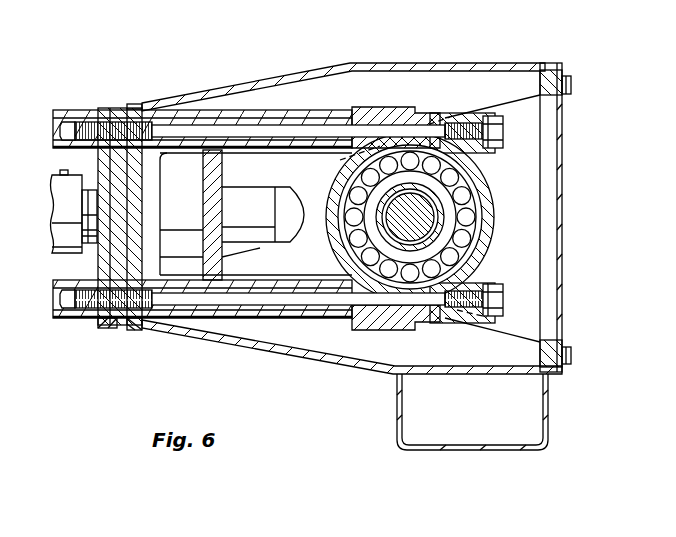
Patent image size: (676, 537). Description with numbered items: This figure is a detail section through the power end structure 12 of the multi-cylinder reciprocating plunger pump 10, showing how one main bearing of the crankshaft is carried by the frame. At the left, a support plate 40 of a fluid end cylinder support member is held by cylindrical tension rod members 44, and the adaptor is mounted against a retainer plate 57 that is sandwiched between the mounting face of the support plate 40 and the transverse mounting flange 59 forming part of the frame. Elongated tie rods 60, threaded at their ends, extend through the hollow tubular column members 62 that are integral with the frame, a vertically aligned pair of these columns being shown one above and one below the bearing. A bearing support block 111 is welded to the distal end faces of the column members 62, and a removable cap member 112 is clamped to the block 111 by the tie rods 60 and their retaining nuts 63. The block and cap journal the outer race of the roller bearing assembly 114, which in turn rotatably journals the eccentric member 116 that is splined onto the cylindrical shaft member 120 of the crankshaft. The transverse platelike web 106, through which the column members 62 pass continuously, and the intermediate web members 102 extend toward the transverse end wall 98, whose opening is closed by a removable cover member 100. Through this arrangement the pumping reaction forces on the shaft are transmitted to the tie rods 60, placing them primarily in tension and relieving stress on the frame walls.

The multi-cylinder reciprocating plunger pump 10 is at (497, 52).
The power end structure 12 is at (377, 373).
The support plate 40 is at (108, 110).
The tension rod members 44 is at (77, 86).
The retainer plate 57 is at (112, 326).
The transverse mounting flange 59 is at (135, 330).
The tie rods 60 is at (252, 128).
The tubular column members 62 is at (313, 118).
The retaining nuts 63 is at (503, 132).
The transverse end wall 98 is at (571, 84).
The cover member 100 is at (557, 245).
The web members 102 is at (458, 340).
The transverse platelike web 106 is at (222, 183).
The bearing support block 111 is at (388, 108).
The cap member 112 is at (498, 217).
The roller bearing assembly 114 is at (458, 192).
The eccentric member 116 is at (440, 237).
The shaft member 120 is at (410, 192).